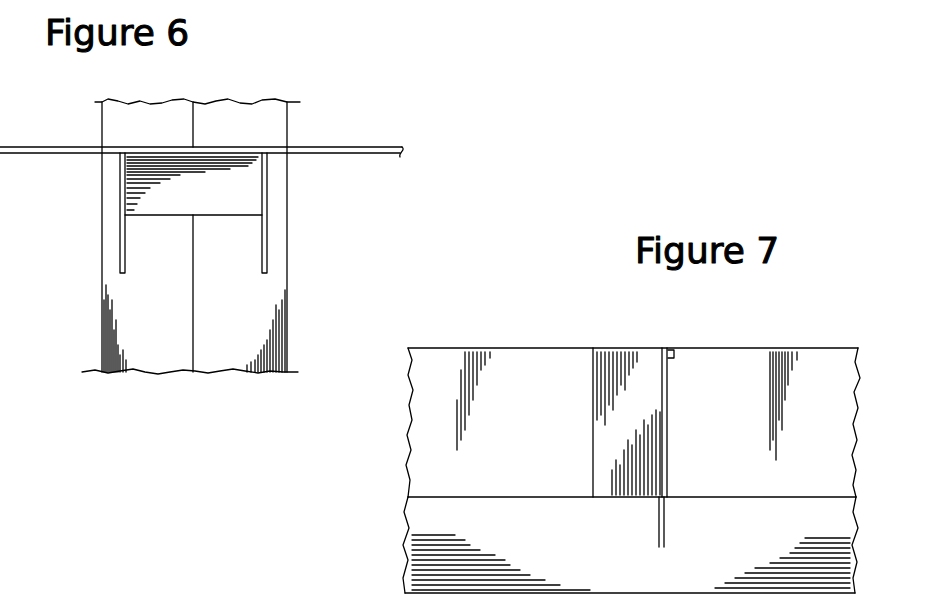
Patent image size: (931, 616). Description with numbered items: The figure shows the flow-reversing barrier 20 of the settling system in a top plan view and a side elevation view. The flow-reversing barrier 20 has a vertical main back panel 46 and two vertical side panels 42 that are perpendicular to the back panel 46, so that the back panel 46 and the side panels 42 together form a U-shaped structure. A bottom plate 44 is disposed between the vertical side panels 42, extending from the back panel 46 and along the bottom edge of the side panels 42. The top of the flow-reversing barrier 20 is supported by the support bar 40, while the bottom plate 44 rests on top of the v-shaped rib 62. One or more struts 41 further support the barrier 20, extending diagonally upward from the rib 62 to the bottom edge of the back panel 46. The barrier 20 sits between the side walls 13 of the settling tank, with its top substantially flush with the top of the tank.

In FIG. 7, the side walls 13 is at (822, 376).
In FIG. 6, the flow-reversing barrier 20 is at (252, 132).
In FIG. 7, the flow-reversing barrier 20 is at (618, 345).
In FIG. 6, the support bar 40 is at (338, 147).
In FIG. 7, the support bar 40 is at (672, 352).
In FIG. 7, the struts 41 is at (666, 525).
In FIG. 6, the vertical side panels 42 is at (118, 233).
In FIG. 7, the vertical side panels 42 is at (613, 438).
In FIG. 6, the bottom plate 44 is at (177, 197).
In FIG. 7, the bottom plate 44 is at (640, 500).
In FIG. 6, the vertical main back panel 46 is at (163, 160).
In FIG. 7, the vertical main back panel 46 is at (668, 430).
In FIG. 6, the v-shaped rib 62 is at (195, 119).
In FIG. 7, the v-shaped rib 62 is at (432, 497).